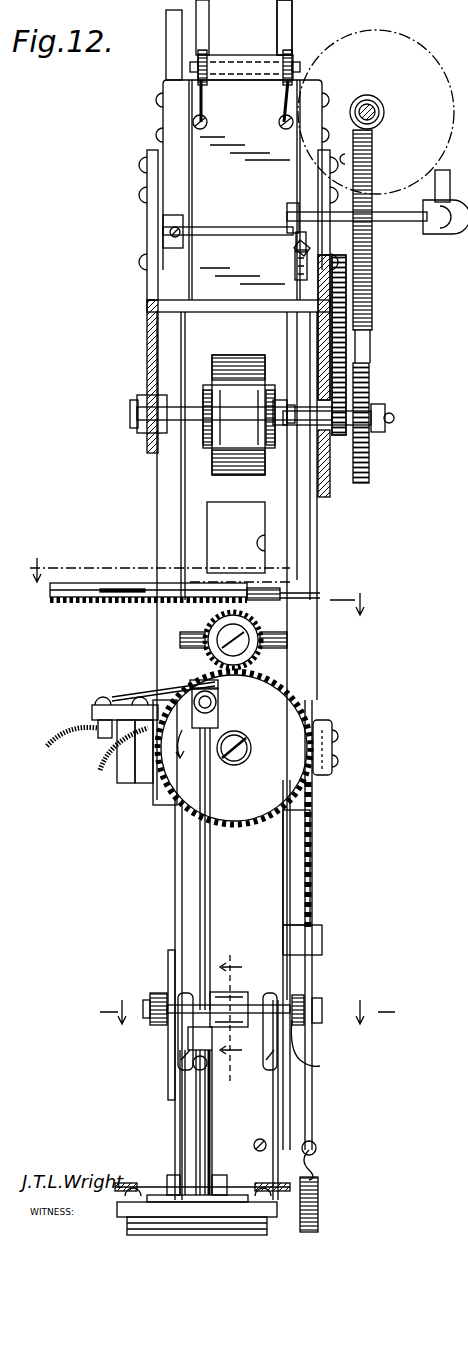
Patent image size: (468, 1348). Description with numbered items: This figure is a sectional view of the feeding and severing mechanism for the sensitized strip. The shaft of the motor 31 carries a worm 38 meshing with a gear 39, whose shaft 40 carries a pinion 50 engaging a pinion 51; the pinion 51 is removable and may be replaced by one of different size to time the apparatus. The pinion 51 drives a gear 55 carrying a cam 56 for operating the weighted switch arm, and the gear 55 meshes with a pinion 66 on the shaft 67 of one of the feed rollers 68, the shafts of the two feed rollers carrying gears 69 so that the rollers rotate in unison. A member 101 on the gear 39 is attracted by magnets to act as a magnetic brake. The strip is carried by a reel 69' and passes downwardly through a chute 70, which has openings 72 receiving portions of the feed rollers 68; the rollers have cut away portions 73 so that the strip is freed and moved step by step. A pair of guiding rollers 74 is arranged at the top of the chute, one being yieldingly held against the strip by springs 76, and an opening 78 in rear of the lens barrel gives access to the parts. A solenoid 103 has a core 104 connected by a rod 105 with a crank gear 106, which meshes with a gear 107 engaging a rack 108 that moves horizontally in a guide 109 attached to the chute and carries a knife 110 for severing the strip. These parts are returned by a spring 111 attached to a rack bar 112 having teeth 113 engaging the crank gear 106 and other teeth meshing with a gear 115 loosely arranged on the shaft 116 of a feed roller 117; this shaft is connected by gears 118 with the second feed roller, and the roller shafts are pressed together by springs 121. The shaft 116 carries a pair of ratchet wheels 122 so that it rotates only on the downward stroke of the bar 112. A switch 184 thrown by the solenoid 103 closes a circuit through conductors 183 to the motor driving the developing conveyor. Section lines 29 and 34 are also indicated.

The guiding rollers 74 is at (240, 60).
The reel 69' is at (303, 27).
The springs 76 is at (280, 97).
The motor 31 is at (398, 48).
The worm 38 is at (369, 97).
The gear 39 is at (375, 140).
The member 101 is at (350, 159).
The shaft 40 is at (215, 228).
The pinion 50 is at (368, 238).
The pinion 51 is at (356, 255).
The gear 55 is at (372, 286).
The cam 56 is at (346, 302).
The pinion 66 is at (345, 438).
The gears 69 is at (382, 429).
The shaft 67 is at (302, 422).
The openings 72 is at (205, 384).
The feed rollers 68 is at (240, 472).
The cut away portions 73 is at (215, 447).
The chute 70 is at (276, 508).
The opening 78 is at (262, 546).
The guide 109 is at (190, 580).
The section line 29 is at (213, 576).
The rack 108 is at (95, 608).
The knife 110 is at (118, 590).
The gear 107 is at (262, 642).
The crank gear 106 is at (265, 692).
The rod 105 is at (200, 865).
The switch 184 is at (92, 712).
The conductors 183 is at (104, 766).
The teeth 113 is at (322, 825).
The rack bar 112 is at (318, 870).
The springs 121 is at (185, 993).
The section line 34 is at (233, 1014).
The feed roller 117 is at (240, 1000).
The gears 118 is at (160, 1000).
The gear 115 is at (300, 1000).
The shaft 116 is at (216, 1025).
The ratchet wheels 122 is at (320, 1068).
The core 104 is at (192, 1142).
The spring 111 is at (320, 1205).
The solenoid 103 is at (270, 1233).